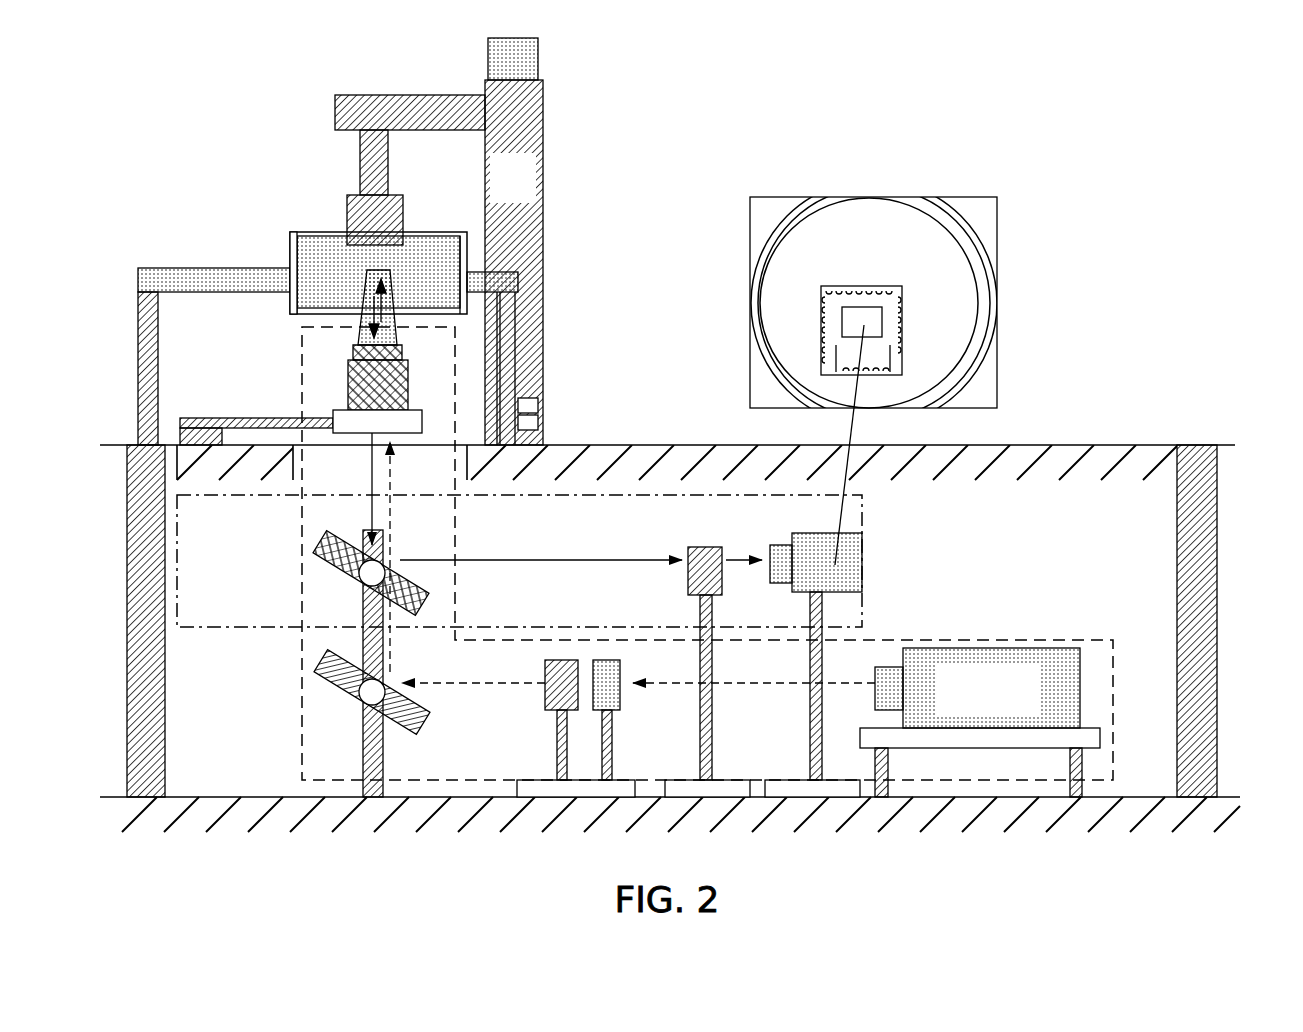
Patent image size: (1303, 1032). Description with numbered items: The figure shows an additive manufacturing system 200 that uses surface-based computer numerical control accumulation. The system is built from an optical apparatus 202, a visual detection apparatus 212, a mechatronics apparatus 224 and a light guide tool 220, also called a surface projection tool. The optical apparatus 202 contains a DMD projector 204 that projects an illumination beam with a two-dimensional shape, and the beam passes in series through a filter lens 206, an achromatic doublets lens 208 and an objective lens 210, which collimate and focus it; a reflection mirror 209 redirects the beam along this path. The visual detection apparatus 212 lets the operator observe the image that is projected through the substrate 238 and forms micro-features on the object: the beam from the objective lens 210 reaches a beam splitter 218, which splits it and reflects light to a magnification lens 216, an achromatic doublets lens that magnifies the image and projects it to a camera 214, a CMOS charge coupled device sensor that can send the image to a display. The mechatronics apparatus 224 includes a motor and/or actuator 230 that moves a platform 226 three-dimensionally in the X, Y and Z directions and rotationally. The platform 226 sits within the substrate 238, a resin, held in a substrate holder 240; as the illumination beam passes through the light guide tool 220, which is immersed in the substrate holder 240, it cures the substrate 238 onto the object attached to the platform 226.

The additive manufacturing system 200 is at (250, 119).
The optical apparatus 202 is at (1100, 636).
The DMD projector 204 is at (1035, 660).
The filter lens 206 is at (610, 695).
The achromatic doublets lens 208 is at (553, 690).
The reflection mirror 209 is at (410, 720).
The objective lens 210 is at (412, 400).
The visual detection apparatus 212 is at (867, 525).
The camera 214 is at (848, 580).
The magnification lens 216 is at (712, 578).
The beam splitter 218 is at (410, 590).
The light guide tool 220 is at (370, 268).
The mechatronics apparatus 224 is at (557, 80).
The platform 226 is at (347, 225).
The motor and/or actuator 230 is at (538, 425).
The substrate 238 is at (297, 300).
The substrate holder 240 is at (290, 245).